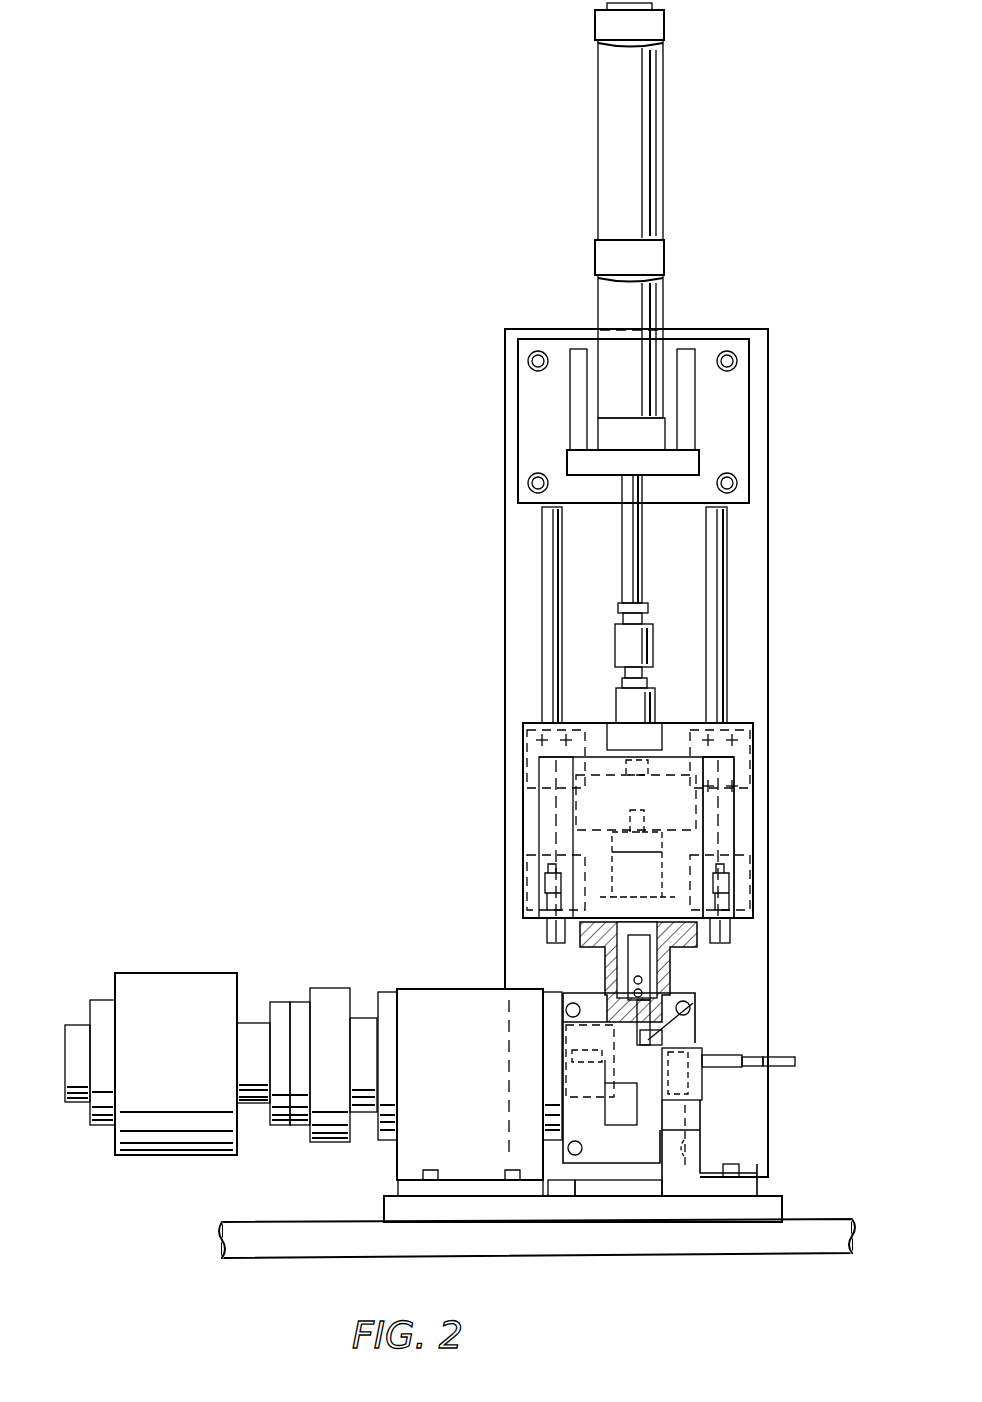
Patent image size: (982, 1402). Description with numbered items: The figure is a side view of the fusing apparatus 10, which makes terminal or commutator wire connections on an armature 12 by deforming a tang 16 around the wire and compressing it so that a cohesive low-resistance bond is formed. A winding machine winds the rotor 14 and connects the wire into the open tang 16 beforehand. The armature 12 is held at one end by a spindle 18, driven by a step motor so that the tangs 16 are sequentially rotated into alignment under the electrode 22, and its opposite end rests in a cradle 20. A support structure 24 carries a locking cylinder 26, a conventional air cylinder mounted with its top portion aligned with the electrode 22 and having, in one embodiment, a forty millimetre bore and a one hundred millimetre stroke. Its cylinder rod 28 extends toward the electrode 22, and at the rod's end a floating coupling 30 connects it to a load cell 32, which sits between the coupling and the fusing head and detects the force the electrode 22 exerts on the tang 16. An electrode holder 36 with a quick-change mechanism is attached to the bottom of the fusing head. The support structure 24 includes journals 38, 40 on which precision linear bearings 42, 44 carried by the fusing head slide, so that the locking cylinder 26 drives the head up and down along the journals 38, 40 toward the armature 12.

The fusing apparatus 10 is at (798, 277).
The armature 12 is at (785, 1052).
The rotor 14 is at (700, 1080).
The tang 16 is at (640, 1048).
The spindle 18 is at (185, 990).
The cradle 20 is at (682, 1113).
The electrode 22 is at (695, 1010).
The support structure 24 is at (768, 513).
The locking cylinder 26 is at (660, 130).
The cylinder rod 28 is at (628, 548).
The floating coupling 30 is at (650, 648).
The load cell 32 is at (621, 703).
The electrode holder 36 is at (600, 975).
The journal 38 is at (722, 571).
The journal 40 is at (550, 598).
The precision linear bearing 42 is at (522, 740).
The precision linear bearing 44 is at (752, 741).